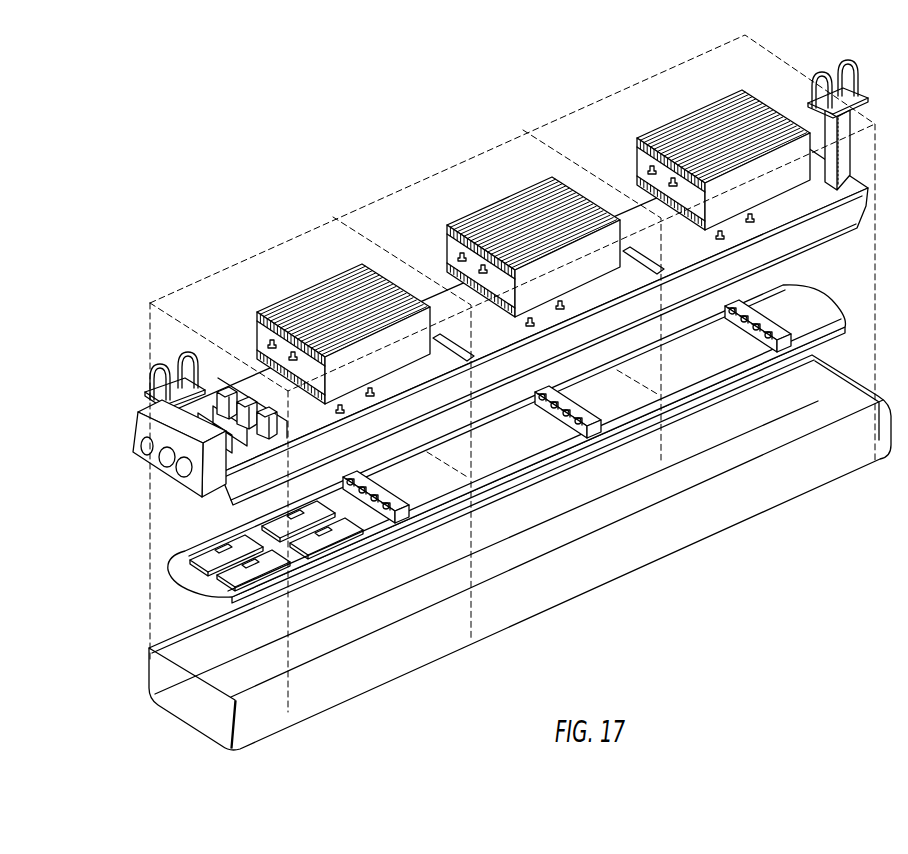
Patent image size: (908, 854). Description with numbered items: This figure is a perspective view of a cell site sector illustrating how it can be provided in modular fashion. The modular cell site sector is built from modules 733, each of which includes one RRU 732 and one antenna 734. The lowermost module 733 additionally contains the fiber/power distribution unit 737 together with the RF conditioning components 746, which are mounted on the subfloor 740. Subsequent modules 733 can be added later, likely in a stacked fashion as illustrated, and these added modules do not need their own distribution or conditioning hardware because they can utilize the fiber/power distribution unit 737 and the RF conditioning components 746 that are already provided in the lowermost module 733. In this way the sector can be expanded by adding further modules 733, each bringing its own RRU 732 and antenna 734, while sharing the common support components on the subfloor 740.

The RRU 732 is at (270, 303).
The module 733 is at (253, 253).
The antenna 734 is at (782, 487).
The fiber/power distribution unit 737 is at (137, 450).
The subfloor 740 is at (187, 590).
The RF conditioning components 746 is at (183, 542).